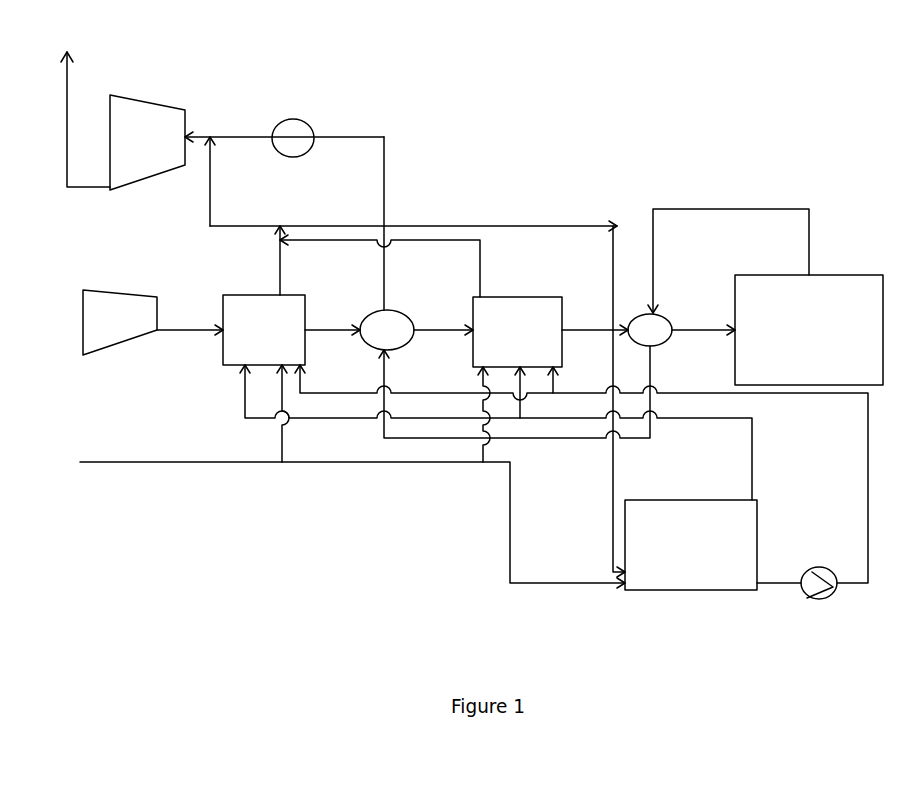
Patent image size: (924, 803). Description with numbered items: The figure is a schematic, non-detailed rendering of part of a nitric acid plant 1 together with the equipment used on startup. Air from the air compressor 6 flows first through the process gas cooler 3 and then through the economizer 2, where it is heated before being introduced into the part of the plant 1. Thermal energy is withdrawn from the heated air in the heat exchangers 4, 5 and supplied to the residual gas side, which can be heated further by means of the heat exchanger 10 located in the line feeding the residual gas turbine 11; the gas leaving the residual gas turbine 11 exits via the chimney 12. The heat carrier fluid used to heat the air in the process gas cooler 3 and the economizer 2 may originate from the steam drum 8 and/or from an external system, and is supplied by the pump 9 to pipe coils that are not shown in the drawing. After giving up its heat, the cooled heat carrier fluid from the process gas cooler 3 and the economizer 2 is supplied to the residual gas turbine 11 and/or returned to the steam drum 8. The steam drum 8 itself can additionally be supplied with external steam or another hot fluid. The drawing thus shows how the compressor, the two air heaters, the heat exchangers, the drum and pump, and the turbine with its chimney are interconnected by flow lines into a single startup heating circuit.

The part of a nitric acid plant 1 is at (862, 290).
The economizer 2 is at (535, 302).
The process gas cooler 3 is at (293, 300).
The heat exchanger 4 is at (658, 325).
The heat exchanger 5 is at (393, 327).
The air compressor 6 is at (113, 303).
The steam drum 8 is at (677, 577).
The pump 9 is at (830, 587).
The heat exchanger 10 is at (305, 125).
The residual gas turbine 11 is at (158, 117).
The chimney 12 is at (67, 92).